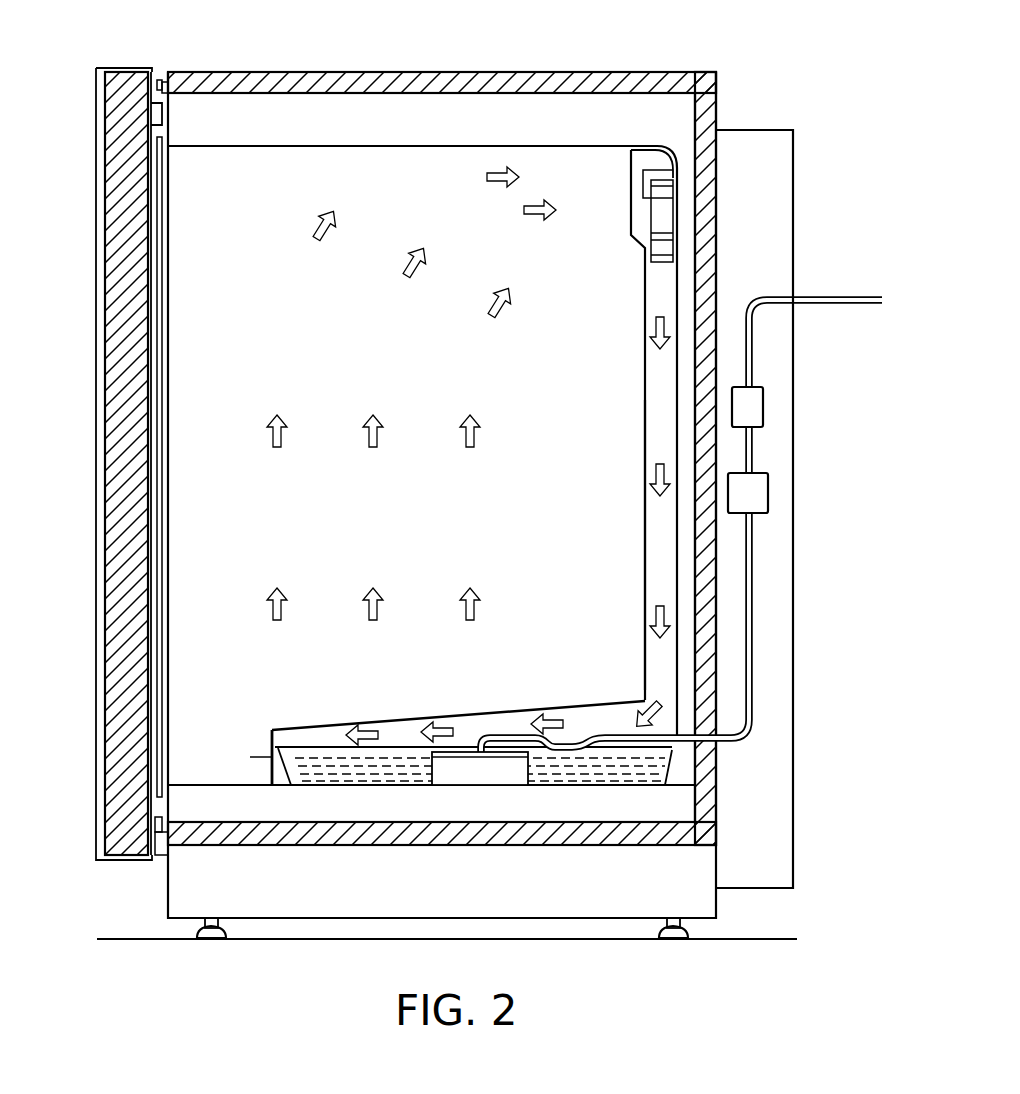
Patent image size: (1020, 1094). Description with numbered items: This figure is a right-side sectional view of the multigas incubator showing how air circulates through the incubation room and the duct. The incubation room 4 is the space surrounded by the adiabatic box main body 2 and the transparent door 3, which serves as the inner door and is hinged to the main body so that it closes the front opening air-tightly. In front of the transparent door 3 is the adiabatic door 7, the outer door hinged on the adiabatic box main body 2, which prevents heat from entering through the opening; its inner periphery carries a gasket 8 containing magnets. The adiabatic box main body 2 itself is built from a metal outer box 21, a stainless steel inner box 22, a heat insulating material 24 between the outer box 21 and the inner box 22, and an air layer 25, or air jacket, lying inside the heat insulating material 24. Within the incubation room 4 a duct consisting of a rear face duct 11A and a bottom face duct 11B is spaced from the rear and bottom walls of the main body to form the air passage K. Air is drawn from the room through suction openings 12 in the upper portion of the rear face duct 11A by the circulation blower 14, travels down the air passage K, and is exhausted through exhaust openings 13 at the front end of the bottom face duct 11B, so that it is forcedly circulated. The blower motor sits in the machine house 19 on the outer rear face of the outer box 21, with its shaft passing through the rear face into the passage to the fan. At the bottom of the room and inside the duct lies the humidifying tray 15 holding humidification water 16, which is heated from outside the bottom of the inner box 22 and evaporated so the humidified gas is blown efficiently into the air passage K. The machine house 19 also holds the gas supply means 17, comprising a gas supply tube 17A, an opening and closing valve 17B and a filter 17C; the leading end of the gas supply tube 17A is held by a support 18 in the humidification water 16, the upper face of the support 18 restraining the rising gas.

The adiabatic box main body 2 is at (447, 470).
The transparent door 3 is at (160, 648).
The incubation room 4 is at (240, 497).
The adiabatic door 7 is at (115, 195).
The gasket 8 is at (163, 72).
The rear face duct 11A is at (645, 366).
The bottom face duct 11B is at (472, 712).
The suction openings 12 is at (631, 183).
The exhaust openings 13 is at (278, 782).
The circulation blower 14 is at (665, 200).
The humidifying tray 15 is at (312, 750).
The humidification water 16 is at (483, 818).
The gas supply means 17 is at (752, 665).
The gas supply tube 17A is at (465, 785).
The opening and closing valve 17B is at (748, 495).
The filter 17C is at (748, 405).
The support 18 is at (520, 785).
The machine house 19 is at (748, 248).
The outer box 21 is at (233, 72).
The inner box 22 is at (282, 145).
The heat insulating material 24 is at (352, 80).
The air layer 25 is at (415, 115).
The air passage K is at (660, 567).